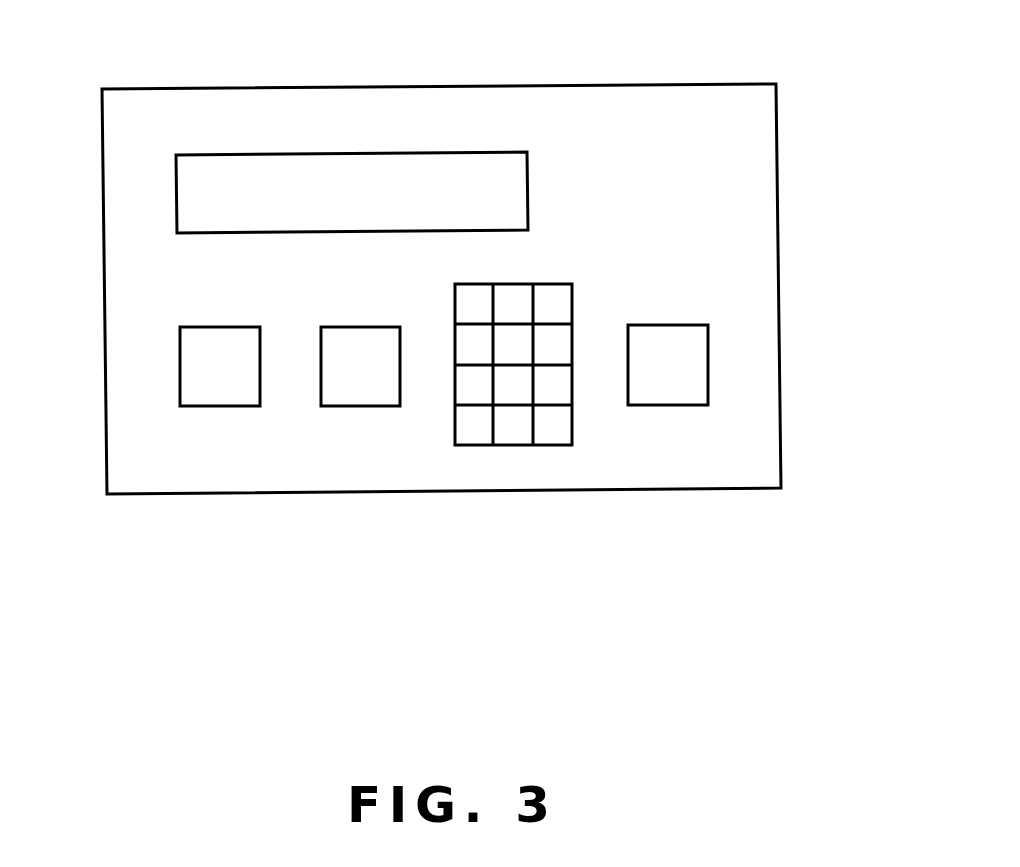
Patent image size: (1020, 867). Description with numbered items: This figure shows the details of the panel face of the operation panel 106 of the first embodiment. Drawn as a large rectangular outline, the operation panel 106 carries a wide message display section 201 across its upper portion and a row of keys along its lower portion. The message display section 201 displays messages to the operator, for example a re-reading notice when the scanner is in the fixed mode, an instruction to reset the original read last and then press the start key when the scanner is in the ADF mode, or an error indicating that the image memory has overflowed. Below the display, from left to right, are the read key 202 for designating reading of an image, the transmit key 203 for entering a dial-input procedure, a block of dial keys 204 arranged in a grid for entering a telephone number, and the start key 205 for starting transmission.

The operation panel 106 is at (777, 214).
The message display section 201 is at (306, 153).
The read key 202 is at (207, 406).
The transmit key 203 is at (358, 406).
The dial keys 204 is at (512, 445).
The start key 205 is at (673, 405).